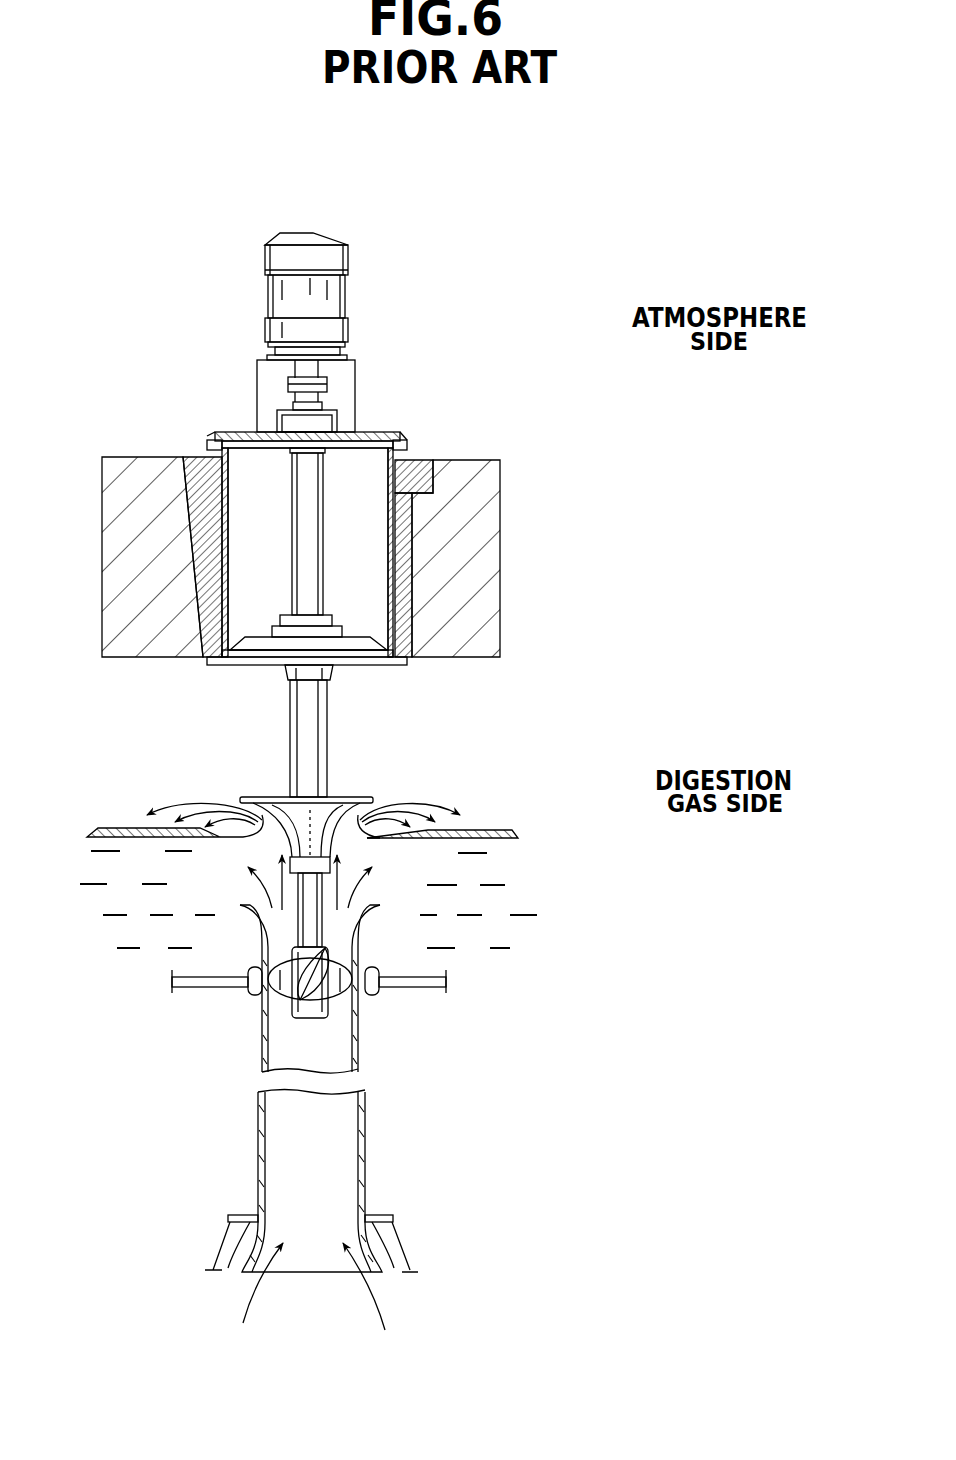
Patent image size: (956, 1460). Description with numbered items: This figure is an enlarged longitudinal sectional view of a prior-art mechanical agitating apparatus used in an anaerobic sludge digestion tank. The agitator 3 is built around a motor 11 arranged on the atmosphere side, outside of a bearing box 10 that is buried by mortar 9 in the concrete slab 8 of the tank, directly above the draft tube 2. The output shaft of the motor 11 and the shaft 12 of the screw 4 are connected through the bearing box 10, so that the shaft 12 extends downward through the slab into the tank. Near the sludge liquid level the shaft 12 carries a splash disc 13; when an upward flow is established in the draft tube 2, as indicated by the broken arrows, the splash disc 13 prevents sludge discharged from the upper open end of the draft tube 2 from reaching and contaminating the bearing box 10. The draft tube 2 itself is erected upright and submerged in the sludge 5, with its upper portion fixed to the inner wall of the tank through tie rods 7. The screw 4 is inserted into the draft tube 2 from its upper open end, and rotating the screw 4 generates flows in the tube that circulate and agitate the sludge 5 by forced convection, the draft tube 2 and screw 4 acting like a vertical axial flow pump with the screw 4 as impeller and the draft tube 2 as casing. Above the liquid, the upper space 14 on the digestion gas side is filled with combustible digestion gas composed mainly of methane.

The draft tube 2 is at (365, 1147).
The agitator 3 is at (240, 347).
The screw 4 is at (337, 985).
The sludge 5 is at (500, 902).
The tie rods 7 is at (207, 977).
The concrete slab 8 is at (470, 467).
The mortar 9 is at (417, 462).
The bearing box 10 is at (397, 563).
The motor 11 is at (348, 286).
The shaft 12 is at (313, 728).
The splash disc 13 is at (337, 797).
The upper space 14 is at (152, 728).